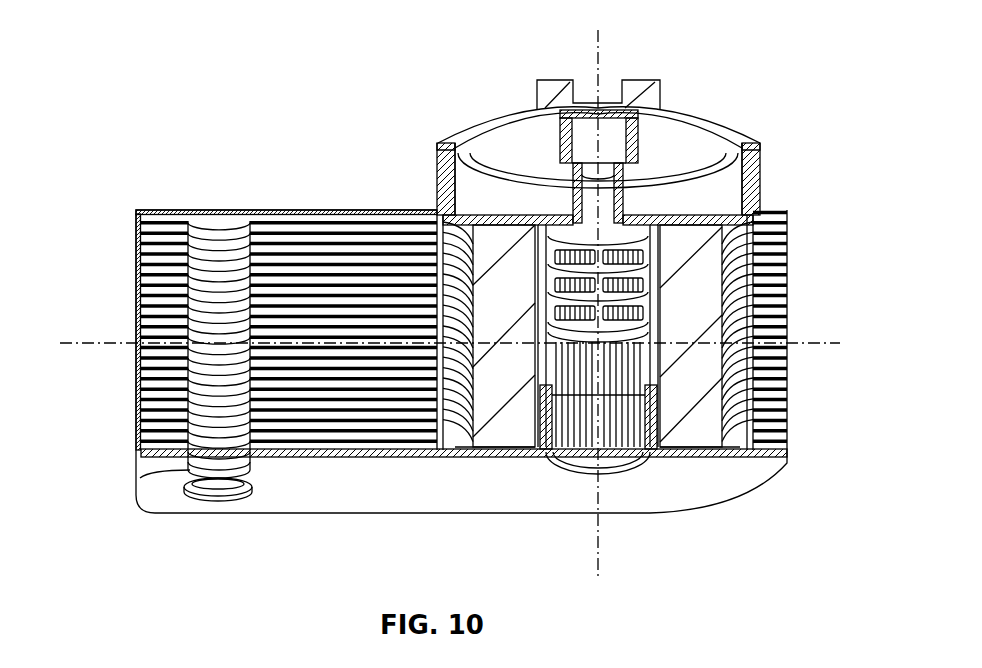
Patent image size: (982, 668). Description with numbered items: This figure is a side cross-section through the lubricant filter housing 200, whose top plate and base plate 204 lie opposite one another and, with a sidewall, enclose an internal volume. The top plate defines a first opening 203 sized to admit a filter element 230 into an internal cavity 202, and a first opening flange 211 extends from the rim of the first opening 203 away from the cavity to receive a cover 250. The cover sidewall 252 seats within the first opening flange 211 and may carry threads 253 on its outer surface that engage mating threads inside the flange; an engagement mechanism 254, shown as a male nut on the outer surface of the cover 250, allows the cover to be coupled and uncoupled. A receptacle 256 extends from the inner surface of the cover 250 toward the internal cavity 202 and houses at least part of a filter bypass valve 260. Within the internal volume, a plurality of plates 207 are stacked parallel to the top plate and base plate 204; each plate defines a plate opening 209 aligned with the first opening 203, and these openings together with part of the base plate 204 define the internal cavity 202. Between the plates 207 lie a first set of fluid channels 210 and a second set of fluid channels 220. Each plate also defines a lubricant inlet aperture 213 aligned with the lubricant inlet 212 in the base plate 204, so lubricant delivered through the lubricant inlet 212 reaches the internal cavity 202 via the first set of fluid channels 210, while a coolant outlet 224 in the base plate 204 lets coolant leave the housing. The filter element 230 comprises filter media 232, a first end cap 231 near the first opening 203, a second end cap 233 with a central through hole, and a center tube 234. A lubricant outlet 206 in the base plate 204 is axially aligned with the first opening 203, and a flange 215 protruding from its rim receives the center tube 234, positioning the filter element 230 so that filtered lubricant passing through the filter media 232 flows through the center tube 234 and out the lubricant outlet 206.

The lubricant filter housing 200 is at (329, 94).
The internal cavity 202 is at (760, 272).
The first opening 203 is at (433, 195).
The base plate 204 is at (340, 492).
The lubricant outlet 206 is at (565, 463).
The plates 207 is at (165, 238).
The plate opening 209 is at (457, 455).
The first set of fluid channels 210 is at (323, 240).
The first opening flange 211 is at (747, 185).
The lubricant inlet 212 is at (197, 467).
The lubricant inlet aperture 213 is at (222, 240).
The flange 215 is at (627, 440).
The second set of fluid channels 220 is at (272, 228).
The coolant outlet 224 is at (220, 500).
The filter element 230 is at (753, 245).
The first end cap 231 is at (690, 216).
The filter media 232 is at (710, 323).
The second end cap 233 is at (693, 460).
The center tube 234 is at (665, 428).
The cover 250 is at (720, 136).
The cover sidewall 252 is at (730, 153).
The threads 253 is at (752, 143).
The engagement mechanism 254 is at (635, 90).
The receptacle 256 is at (670, 120).
The filter bypass valve 260 is at (556, 182).